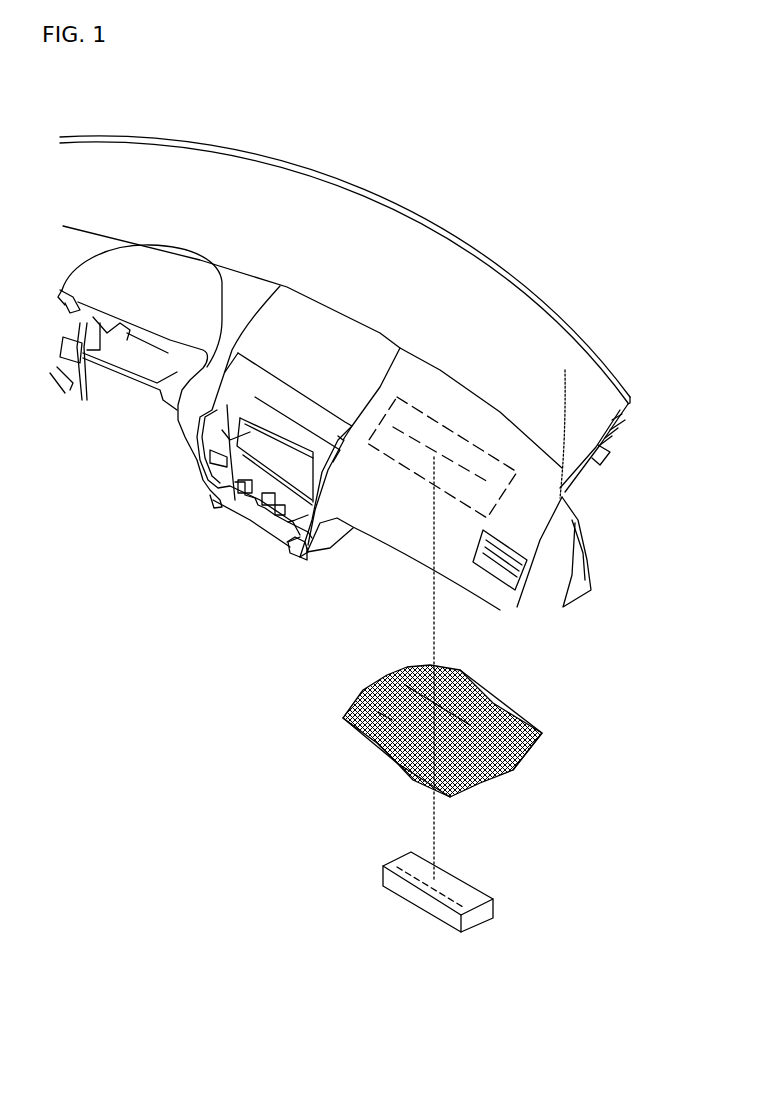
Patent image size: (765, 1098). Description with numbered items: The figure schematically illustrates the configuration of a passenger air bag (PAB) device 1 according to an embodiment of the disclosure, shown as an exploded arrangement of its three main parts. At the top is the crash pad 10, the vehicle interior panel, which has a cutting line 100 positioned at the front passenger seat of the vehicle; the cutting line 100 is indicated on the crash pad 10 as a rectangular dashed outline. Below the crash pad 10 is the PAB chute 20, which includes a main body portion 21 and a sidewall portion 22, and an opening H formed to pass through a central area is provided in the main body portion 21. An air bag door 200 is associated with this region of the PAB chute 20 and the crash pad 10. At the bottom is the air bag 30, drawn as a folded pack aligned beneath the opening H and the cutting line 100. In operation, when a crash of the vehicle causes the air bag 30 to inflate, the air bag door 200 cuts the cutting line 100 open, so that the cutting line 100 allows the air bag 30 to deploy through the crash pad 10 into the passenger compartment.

The passenger air bag device 1 is at (596, 110).
The crash pad 10 is at (437, 292).
The cutting line 100 is at (490, 484).
The PAB chute 20 is at (552, 727).
The main body portion 21 is at (497, 713).
The sidewall portion 22 is at (392, 757).
The air bag door 200 is at (425, 700).
The opening H is at (388, 717).
The air bag 30 is at (503, 908).